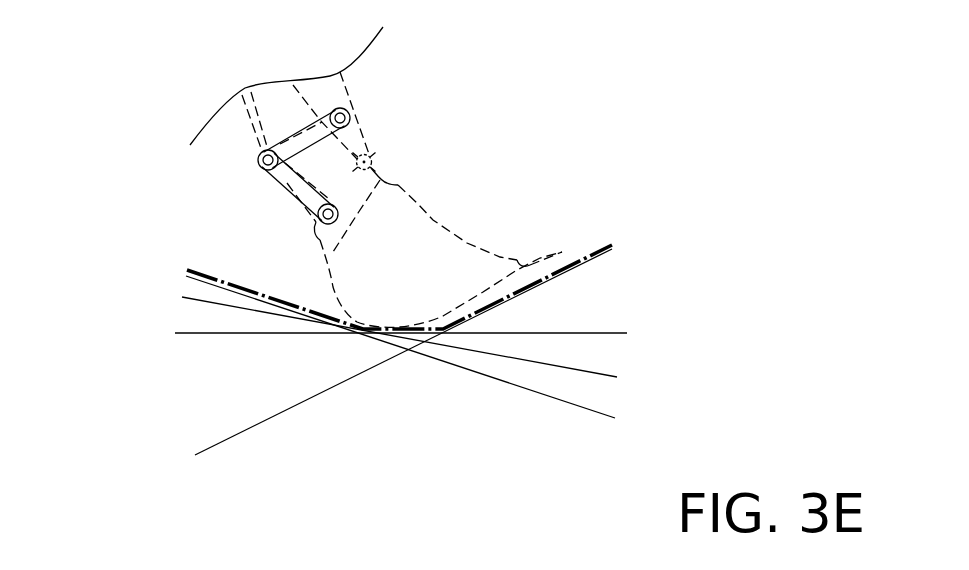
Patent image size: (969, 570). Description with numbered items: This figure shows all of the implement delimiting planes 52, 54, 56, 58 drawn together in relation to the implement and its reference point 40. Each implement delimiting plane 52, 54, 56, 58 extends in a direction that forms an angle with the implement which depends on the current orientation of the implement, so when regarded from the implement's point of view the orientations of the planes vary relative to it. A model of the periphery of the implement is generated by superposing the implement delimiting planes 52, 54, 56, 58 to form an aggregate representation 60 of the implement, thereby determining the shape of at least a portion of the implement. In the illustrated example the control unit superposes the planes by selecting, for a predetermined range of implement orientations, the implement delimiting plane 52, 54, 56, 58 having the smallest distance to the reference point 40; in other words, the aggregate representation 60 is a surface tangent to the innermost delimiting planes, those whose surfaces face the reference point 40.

The reference point 40 is at (375, 163).
The implement delimiting plane 52 is at (593, 410).
The implement delimiting plane 54 is at (603, 375).
The implement delimiting plane 56 is at (597, 253).
The implement delimiting plane 58 is at (605, 334).
The aggregate representation 60 is at (225, 240).